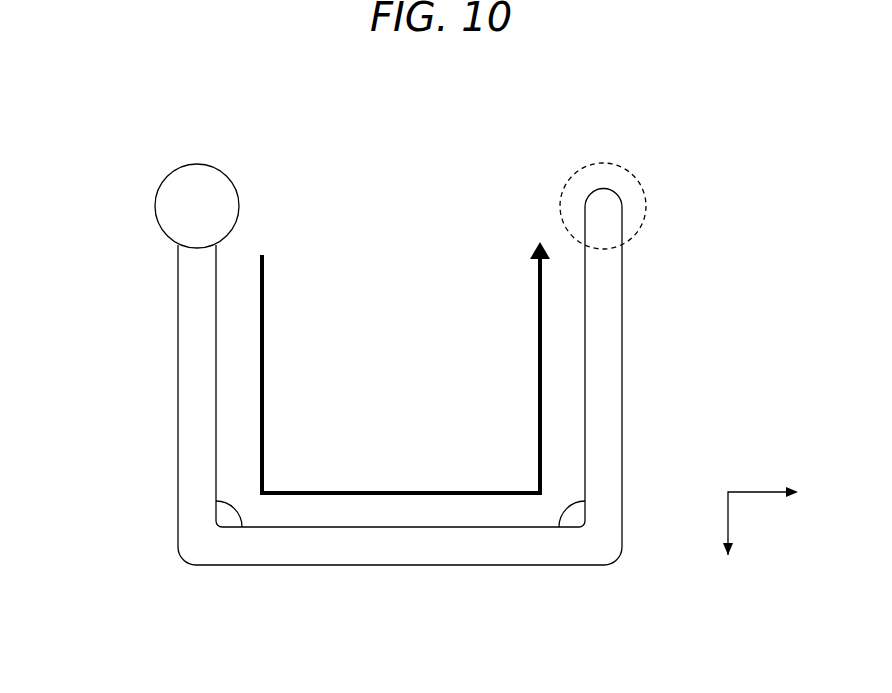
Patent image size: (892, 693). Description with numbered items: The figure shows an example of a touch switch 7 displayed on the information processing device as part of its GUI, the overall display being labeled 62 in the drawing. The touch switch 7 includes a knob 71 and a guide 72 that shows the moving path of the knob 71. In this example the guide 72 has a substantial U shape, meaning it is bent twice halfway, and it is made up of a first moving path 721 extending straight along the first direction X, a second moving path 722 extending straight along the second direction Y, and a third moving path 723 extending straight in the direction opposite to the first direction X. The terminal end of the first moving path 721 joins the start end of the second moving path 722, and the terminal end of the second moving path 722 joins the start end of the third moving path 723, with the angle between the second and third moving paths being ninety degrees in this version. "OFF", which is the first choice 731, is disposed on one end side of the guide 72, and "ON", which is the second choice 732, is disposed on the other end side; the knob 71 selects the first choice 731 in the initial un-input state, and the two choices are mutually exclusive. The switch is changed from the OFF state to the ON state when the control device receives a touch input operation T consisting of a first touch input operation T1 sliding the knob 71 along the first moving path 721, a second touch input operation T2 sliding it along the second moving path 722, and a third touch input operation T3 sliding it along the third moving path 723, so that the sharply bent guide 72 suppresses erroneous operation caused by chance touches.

The display unit 62 is at (85, 129).
The touch switch 7 is at (497, 118).
The knob 71 is at (197, 185).
The guide 72 is at (400, 578).
The first moving path 721 is at (195, 430).
The second moving path 722 is at (473, 550).
The third moving path 723 is at (608, 425).
The first choice 731 is at (282, 178).
The second choice 732 is at (682, 176).
The touch input operation T is at (320, 335).
The first touch input operation T1 is at (262, 425).
The second touch input operation T2 is at (405, 440).
The third touch input operation T3 is at (540, 425).